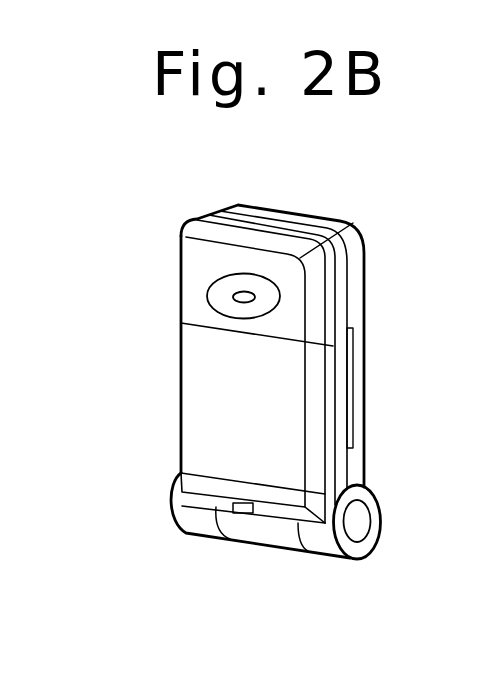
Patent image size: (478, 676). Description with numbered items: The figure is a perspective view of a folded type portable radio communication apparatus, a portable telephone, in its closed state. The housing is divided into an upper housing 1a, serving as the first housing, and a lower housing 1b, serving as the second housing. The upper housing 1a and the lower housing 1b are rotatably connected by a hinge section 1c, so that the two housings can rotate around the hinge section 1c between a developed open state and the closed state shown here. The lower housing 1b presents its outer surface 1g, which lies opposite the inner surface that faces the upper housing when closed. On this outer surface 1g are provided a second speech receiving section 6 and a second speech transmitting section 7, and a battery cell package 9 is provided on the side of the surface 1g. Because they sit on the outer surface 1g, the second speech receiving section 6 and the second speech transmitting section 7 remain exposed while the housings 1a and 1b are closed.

The upper housing 1a is at (357, 260).
The lower housing 1b is at (195, 244).
The hinge section 1c is at (355, 523).
The outer surface 1g is at (197, 272).
The second speech receiving section 6 is at (238, 297).
The second speech transmitting section 7 is at (243, 514).
The battery cell package 9 is at (197, 425).